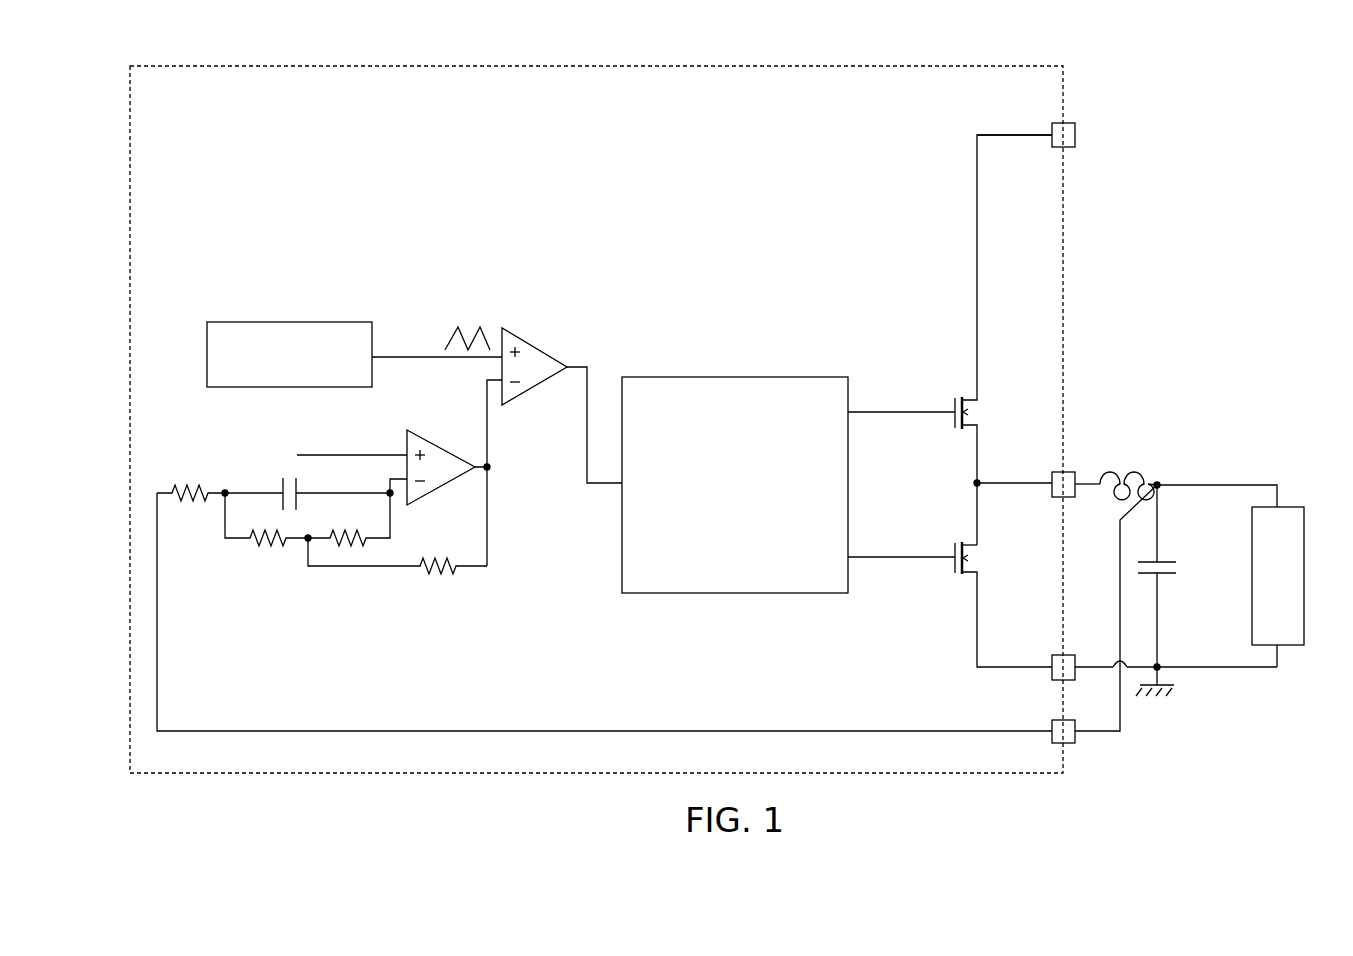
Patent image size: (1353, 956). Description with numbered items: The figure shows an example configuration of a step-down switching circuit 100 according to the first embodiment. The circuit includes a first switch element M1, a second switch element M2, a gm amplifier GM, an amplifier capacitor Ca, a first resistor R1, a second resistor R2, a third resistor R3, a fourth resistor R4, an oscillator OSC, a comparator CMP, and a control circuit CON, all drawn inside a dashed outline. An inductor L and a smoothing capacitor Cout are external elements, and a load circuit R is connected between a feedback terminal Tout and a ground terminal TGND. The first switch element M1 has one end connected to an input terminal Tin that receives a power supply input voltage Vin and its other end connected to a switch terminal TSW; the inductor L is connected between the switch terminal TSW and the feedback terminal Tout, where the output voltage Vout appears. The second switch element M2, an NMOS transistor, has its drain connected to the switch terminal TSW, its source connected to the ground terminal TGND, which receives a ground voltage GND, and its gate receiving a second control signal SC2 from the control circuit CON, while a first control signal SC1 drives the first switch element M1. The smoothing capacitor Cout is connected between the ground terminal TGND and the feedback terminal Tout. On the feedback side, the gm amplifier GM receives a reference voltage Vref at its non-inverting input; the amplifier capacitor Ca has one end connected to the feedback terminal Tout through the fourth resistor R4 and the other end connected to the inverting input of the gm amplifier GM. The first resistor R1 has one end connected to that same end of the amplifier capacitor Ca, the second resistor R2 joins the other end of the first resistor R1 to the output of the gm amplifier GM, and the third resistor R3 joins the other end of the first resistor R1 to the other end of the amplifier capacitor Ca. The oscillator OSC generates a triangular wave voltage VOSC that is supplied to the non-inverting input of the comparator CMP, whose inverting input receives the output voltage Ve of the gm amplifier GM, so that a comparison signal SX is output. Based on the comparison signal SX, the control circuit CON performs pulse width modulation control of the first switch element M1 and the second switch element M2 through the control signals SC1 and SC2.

The step-down switching circuit 100 is at (1066, 758).
The oscillator OSC is at (290, 322).
The triangular wave voltage VOSC is at (437, 342).
The comparator CMP is at (535, 340).
The comparison signal SX is at (594, 413).
The gm amplifier GM is at (437, 432).
The output voltage Ve is at (496, 473).
The reference voltage Vref is at (352, 441).
The fourth resistor R4 is at (195, 485).
The amplifier capacitor Ca is at (281, 486).
The first resistor R1 is at (265, 546).
The third resistor R3 is at (346, 547).
The second resistor R2 is at (438, 574).
The control circuit CON is at (735, 377).
The first control signal SC1 is at (901, 398).
The second control signal SC2 is at (901, 544).
The first switch element M1 is at (972, 398).
The second switch element M2 is at (967, 575).
The input terminal Tin is at (1057, 123).
The input voltage Vin is at (1043, 135).
The switch terminal TSW is at (1053, 472).
The ground terminal TGND is at (1055, 655).
The ground voltage GND is at (1147, 683).
The feedback terminal Tout is at (1050, 739).
The inductor L is at (1125, 472).
The output voltage Vout is at (1217, 483).
The smoothing capacitor Cout is at (1168, 558).
The load circuit R is at (1304, 576).